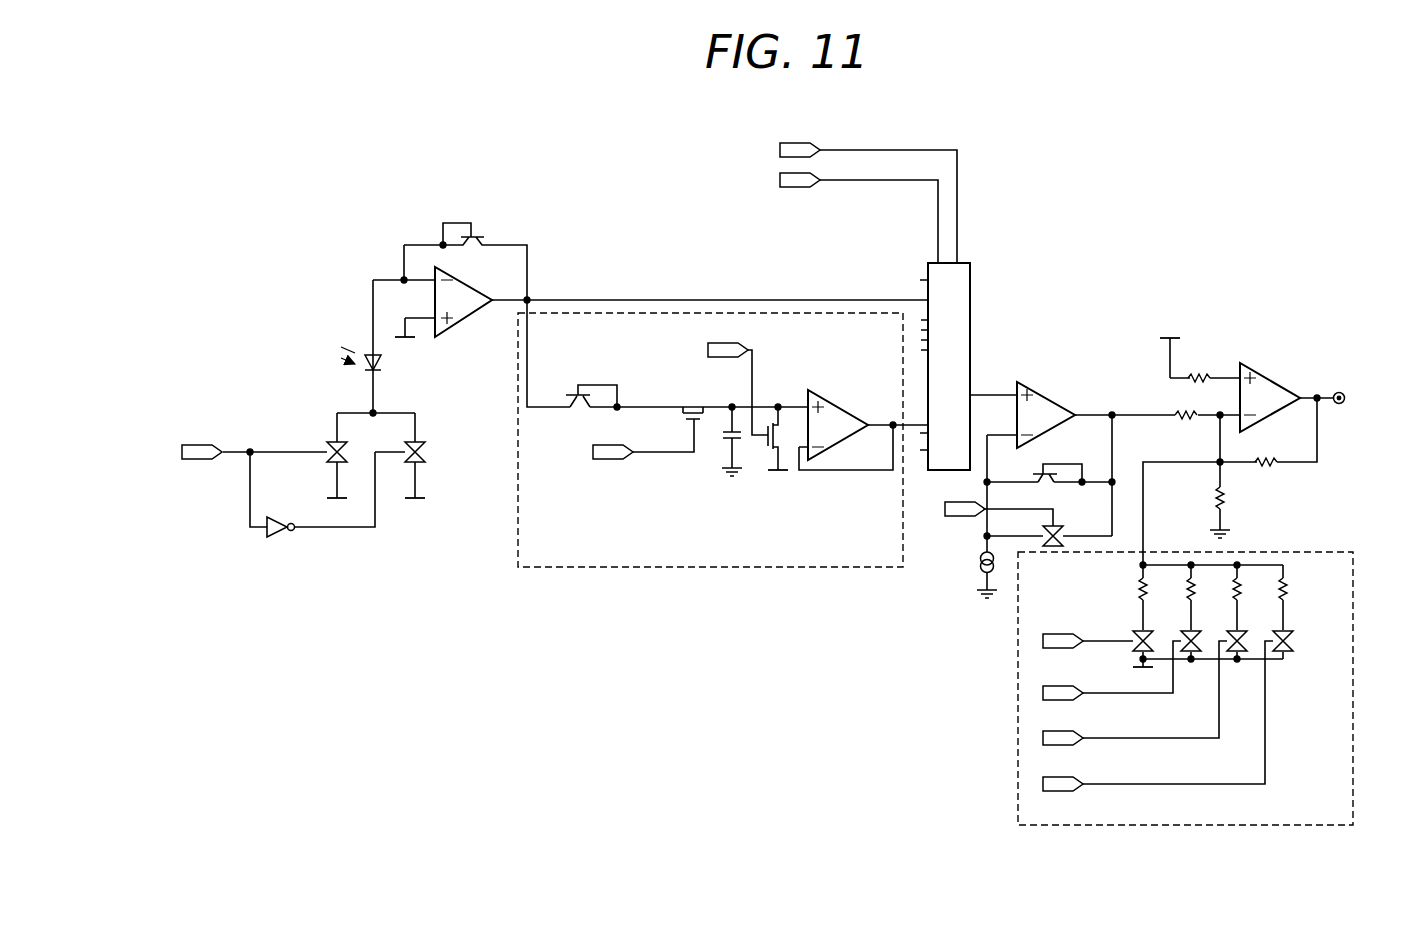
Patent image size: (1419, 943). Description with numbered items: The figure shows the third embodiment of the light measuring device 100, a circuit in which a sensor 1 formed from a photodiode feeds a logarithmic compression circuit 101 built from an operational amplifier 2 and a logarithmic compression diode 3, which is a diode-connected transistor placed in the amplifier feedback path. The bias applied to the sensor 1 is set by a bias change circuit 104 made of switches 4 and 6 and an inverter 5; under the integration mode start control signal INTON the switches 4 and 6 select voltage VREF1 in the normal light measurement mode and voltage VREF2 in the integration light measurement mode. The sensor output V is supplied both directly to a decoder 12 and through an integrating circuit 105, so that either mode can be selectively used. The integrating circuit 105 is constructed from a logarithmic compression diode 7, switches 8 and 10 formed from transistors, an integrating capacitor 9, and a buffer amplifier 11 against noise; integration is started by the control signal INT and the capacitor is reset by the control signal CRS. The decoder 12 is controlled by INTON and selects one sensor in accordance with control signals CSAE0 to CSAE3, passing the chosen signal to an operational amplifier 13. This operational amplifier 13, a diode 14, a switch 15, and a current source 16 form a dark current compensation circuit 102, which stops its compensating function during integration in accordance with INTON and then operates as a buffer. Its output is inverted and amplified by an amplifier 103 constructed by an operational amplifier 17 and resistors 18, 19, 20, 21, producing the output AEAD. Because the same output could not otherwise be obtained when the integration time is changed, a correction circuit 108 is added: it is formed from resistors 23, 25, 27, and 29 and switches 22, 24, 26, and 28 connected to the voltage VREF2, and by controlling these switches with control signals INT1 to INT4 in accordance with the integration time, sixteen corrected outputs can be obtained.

The sensor 1 is at (385, 366).
The operational amplifier 2 is at (476, 238).
The logarithmic compression diode 3 is at (466, 328).
The switch 4 is at (333, 443).
The inverter 5 is at (277, 538).
The switch 6 is at (425, 443).
The logarithmic compression diode 7 is at (575, 394).
The switch 8 is at (690, 404).
The integrating capacitor 9 is at (724, 437).
The switch 10 is at (767, 452).
The buffer amplifier 11 is at (830, 402).
The decoder 12 is at (960, 263).
The operational amplifier 13 is at (1044, 394).
The diode 14 is at (1045, 462).
The switch 15 is at (1062, 530).
The current source 16 is at (975, 566).
The operational amplifier 17 is at (1272, 378).
The resistor 18 is at (1180, 423).
The resistor 19 is at (1290, 478).
The resistor 20 is at (1212, 502).
The resistor 21 is at (1203, 350).
The switch 22 is at (1133, 631).
The resistor 23 is at (1134, 590).
The switch 24 is at (1196, 629).
The resistor 25 is at (1186, 584).
The switch 26 is at (1243, 631).
The resistor 27 is at (1242, 584).
The switch 28 is at (1295, 646).
The resistor 29 is at (1290, 586).
The light measuring device 100 is at (485, 122).
The logarithmic compression circuit 101 is at (407, 226).
The dark current compensation circuit 102 is at (1036, 370).
The amplifier 103 is at (1270, 324).
The bias change circuit 104 is at (272, 403).
The integrating circuit 105 is at (585, 568).
The correction circuit 108 is at (1058, 827).